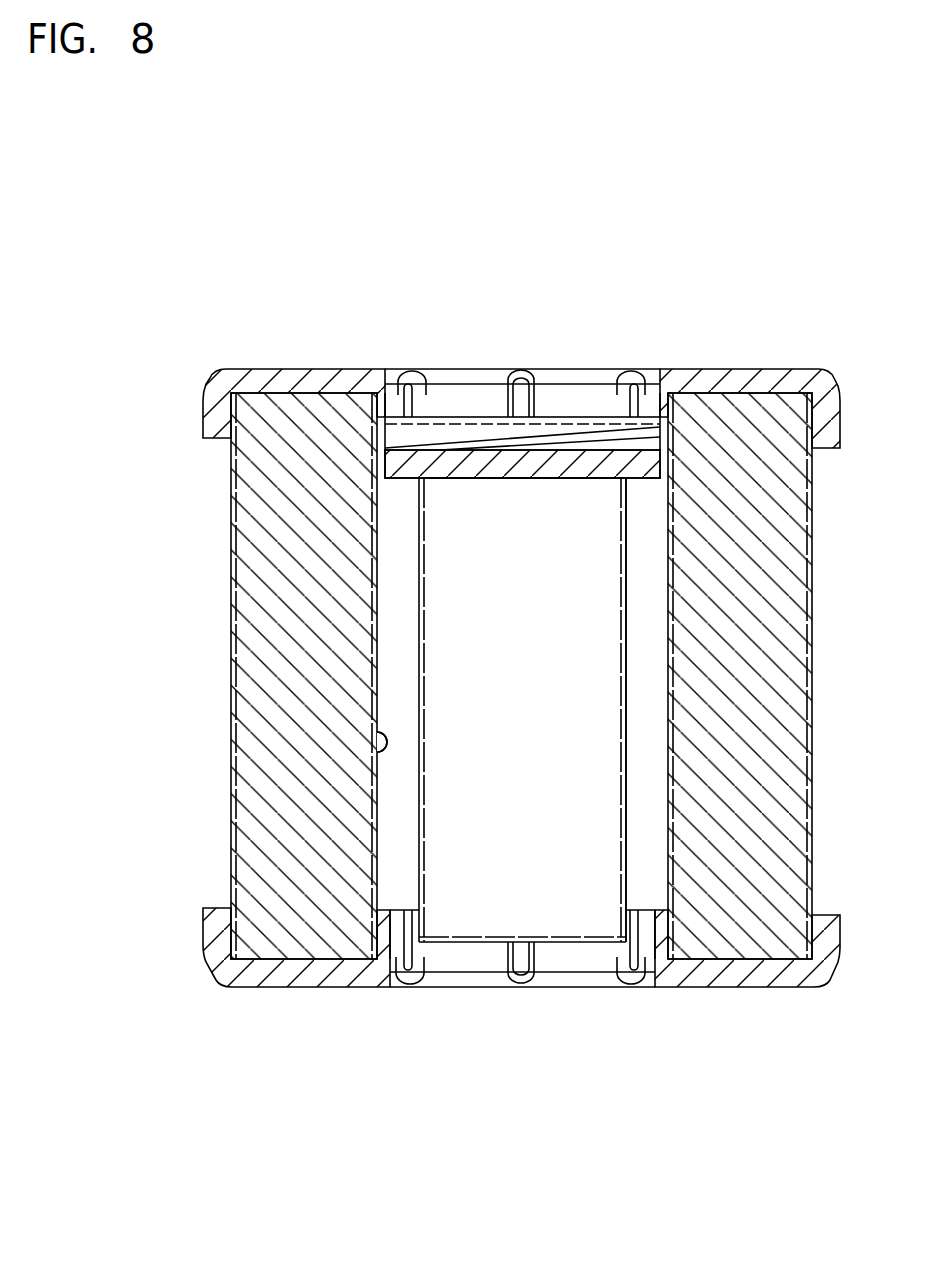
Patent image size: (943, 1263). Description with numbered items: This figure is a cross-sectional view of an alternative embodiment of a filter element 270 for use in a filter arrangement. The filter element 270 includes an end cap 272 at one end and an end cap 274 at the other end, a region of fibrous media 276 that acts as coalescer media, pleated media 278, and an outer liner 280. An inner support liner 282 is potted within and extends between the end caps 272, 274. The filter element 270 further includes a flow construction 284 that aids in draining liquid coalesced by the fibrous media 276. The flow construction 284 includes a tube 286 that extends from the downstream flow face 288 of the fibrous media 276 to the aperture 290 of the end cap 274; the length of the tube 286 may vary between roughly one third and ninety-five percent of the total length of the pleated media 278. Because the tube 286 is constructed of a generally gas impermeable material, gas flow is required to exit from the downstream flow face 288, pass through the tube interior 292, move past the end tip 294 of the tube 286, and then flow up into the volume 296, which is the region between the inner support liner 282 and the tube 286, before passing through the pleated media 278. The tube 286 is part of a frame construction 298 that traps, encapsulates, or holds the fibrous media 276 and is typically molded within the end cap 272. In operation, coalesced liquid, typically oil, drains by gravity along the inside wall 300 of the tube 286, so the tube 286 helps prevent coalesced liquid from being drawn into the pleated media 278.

The filter element 270 is at (272, 328).
The end cap 272 is at (752, 369).
The end cap 274 is at (263, 987).
The fibrous media 276 is at (556, 500).
The pleated media 278 is at (245, 634).
The outer liner 280 is at (231, 560).
The inner support liner 282 is at (660, 775).
The flow construction 284 is at (450, 662).
The tube 286 is at (425, 825).
The downstream flow face 288 is at (472, 480).
The aperture 290 is at (660, 923).
The tube interior 292 is at (620, 647).
The end tip 294 is at (460, 945).
The volume 296 is at (388, 745).
The frame construction 298 is at (466, 400).
The inside wall 300 is at (620, 850).